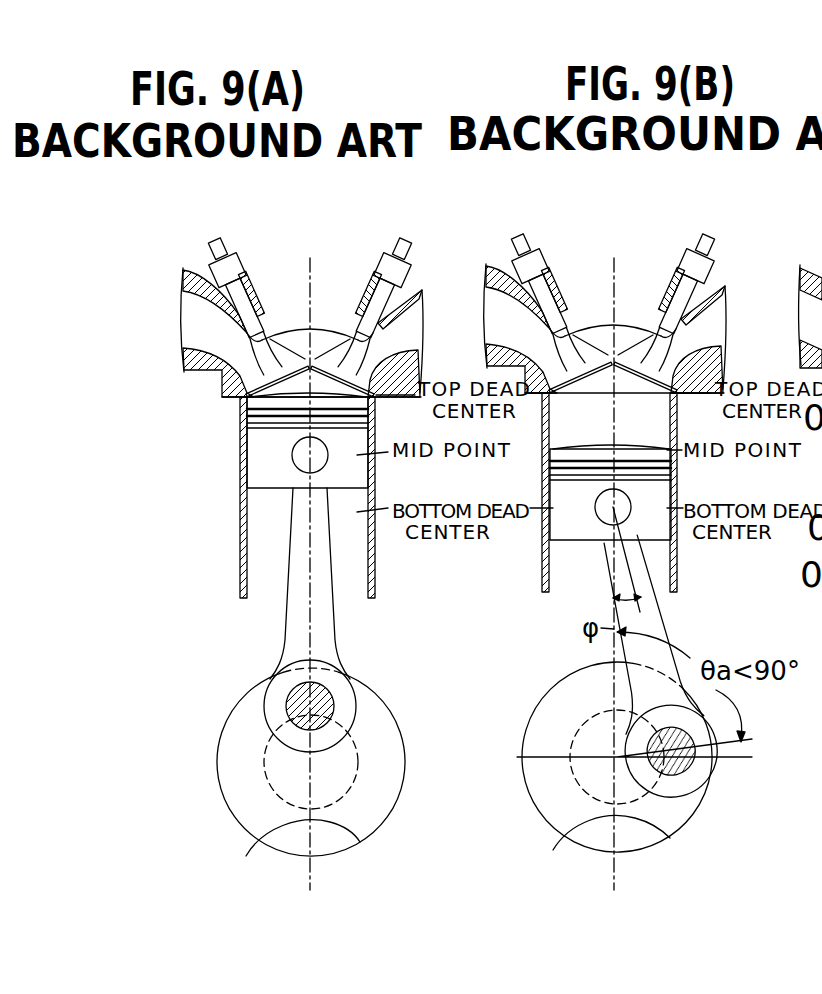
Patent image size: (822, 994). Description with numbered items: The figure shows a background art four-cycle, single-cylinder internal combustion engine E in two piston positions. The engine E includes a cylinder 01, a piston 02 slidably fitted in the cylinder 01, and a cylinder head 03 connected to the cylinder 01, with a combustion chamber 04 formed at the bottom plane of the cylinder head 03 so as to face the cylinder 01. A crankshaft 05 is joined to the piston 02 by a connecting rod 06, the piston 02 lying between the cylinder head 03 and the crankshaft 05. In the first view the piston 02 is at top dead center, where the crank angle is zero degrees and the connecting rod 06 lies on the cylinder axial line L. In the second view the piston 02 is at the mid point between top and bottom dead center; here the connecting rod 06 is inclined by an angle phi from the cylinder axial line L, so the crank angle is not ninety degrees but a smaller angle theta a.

In FIG. 9A, the cylinder 01 is at (247, 562).
In FIG. 9B, the cylinder 01 is at (553, 565).
In FIG. 9A, the piston 02 is at (268, 467).
In FIG. 9B, the piston 02 is at (548, 512).
In FIG. 9A, the cylinder head 03 is at (265, 300).
In FIG. 9B, the cylinder head 03 is at (568, 300).
In FIG. 9A, the combustion chamber 04 is at (290, 382).
In FIG. 9A, the crankshaft 05 is at (357, 840).
In FIG. 9B, the crankshaft 05 is at (669, 834).
In FIG. 9A, the connecting rod 06 is at (324, 567).
In FIG. 9B, the connecting rod 06 is at (645, 620).
In FIG. 9A, the internal combustion engine E is at (330, 288).
In FIG. 9B, the internal combustion engine E is at (645, 288).
In FIG. 9A, the cylinder axial line L is at (299, 856).
In FIG. 9B, the cylinder axial line L is at (608, 852).